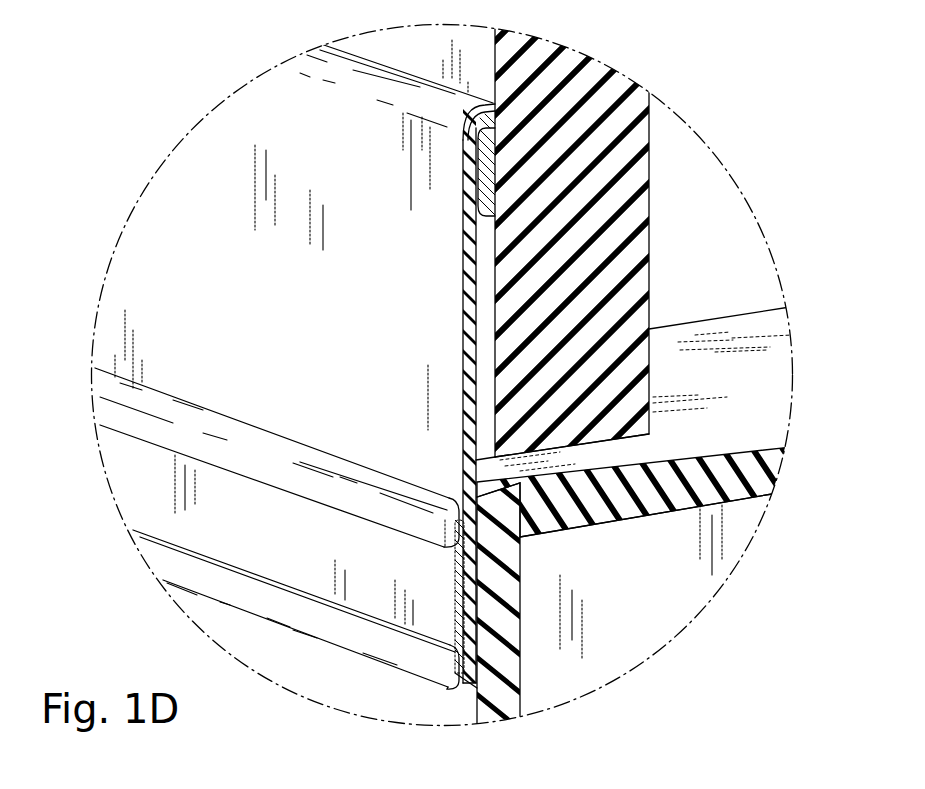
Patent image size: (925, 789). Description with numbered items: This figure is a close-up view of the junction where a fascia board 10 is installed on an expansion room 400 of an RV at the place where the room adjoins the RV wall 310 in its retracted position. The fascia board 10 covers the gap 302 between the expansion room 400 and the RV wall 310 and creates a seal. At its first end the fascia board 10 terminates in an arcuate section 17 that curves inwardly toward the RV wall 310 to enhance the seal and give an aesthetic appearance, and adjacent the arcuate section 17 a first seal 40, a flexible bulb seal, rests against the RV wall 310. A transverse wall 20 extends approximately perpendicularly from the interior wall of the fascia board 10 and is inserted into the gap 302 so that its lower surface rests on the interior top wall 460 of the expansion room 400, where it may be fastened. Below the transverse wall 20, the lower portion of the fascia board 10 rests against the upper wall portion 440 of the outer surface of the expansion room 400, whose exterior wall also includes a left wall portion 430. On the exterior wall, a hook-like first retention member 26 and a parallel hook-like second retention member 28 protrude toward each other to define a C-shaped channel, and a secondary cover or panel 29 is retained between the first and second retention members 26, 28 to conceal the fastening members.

The fascia board 10 is at (165, 230).
The arcuate section 17 is at (467, 107).
The transverse wall 20 is at (616, 468).
The first retention member 26 is at (115, 403).
The second retention member 28 is at (170, 563).
The secondary cover or panel 29 is at (138, 463).
The first seal 40 is at (497, 167).
The gap 302 is at (634, 448).
The RV wall 310 is at (476, 43).
The expansion room 400 is at (238, 638).
The left wall portion 430 is at (670, 598).
The upper wall portion 440 is at (513, 675).
The interior top wall 460 is at (688, 333).